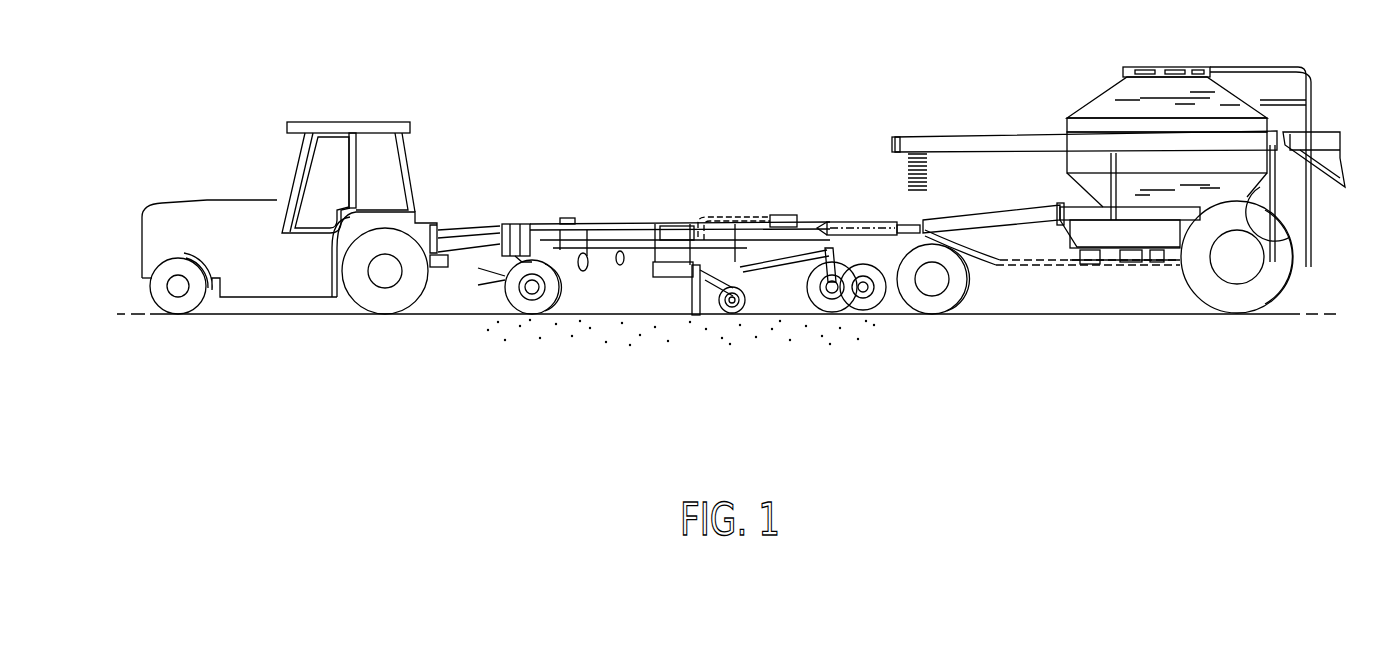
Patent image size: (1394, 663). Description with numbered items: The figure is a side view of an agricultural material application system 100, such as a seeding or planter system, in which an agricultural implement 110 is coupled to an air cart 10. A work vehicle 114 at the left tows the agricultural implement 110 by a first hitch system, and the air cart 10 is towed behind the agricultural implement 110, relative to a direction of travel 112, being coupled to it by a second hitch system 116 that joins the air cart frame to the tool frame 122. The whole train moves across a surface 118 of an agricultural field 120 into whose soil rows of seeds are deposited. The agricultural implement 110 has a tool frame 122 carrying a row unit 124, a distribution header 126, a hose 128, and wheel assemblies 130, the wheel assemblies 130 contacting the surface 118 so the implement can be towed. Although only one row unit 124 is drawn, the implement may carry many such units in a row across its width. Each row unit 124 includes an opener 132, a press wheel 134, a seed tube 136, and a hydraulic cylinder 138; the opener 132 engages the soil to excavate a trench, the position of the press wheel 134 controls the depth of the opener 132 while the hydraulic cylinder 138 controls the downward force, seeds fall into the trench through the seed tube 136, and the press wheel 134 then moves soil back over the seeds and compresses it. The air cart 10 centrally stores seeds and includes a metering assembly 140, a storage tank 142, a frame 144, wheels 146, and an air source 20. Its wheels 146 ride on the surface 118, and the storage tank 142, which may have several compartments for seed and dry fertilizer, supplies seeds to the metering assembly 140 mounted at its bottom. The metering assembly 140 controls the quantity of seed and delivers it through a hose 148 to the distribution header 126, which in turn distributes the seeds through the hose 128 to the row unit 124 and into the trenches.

The air cart 10 is at (1094, 67).
The air source 20 is at (1287, 208).
The agricultural material application system 100 is at (663, 176).
The agricultural implement 110 is at (585, 220).
The direction of travel 112 is at (756, 123).
The work vehicle 114 is at (344, 104).
The second hitch system 116 is at (808, 232).
The surface 118 is at (1090, 314).
The agricultural field 120 is at (905, 420).
The tool frame 122 is at (688, 237).
The row unit 124 is at (676, 296).
The distribution header 126 is at (784, 215).
The hose 128 is at (738, 218).
The wheel assemblies 130 is at (521, 316).
The opener 132 is at (694, 316).
The press wheel 134 is at (747, 301).
The seed tube 136 is at (723, 318).
The hydraulic cylinder 138 is at (657, 283).
The metering assembly 140 is at (1150, 258).
The storage tank 142 is at (1117, 98).
The frame 144 is at (977, 211).
The wheels 146 is at (982, 293).
The hose 148 is at (1015, 263).